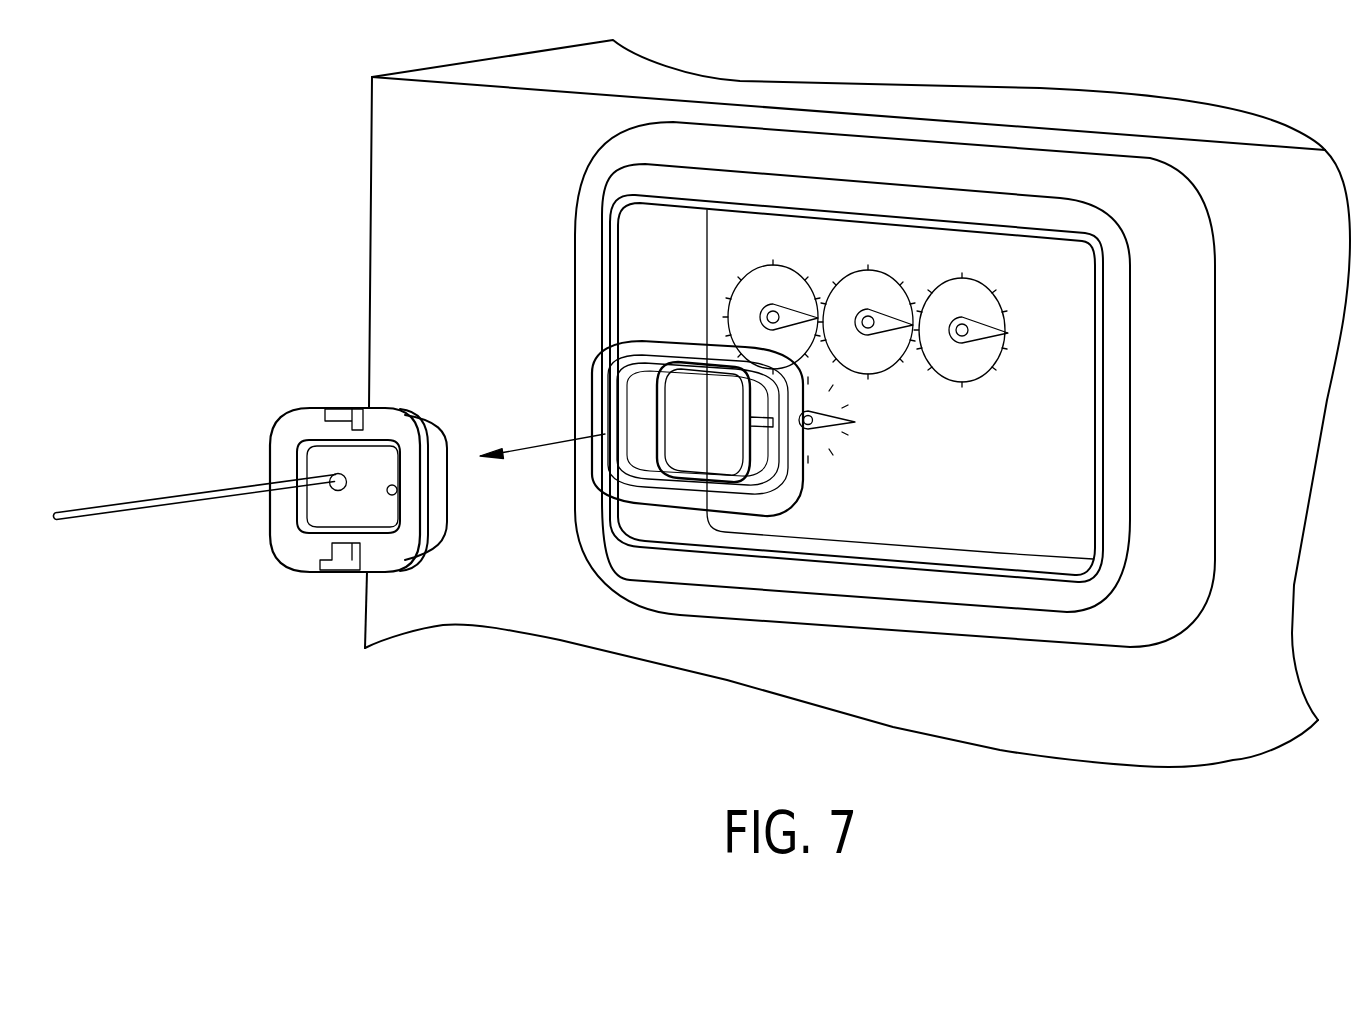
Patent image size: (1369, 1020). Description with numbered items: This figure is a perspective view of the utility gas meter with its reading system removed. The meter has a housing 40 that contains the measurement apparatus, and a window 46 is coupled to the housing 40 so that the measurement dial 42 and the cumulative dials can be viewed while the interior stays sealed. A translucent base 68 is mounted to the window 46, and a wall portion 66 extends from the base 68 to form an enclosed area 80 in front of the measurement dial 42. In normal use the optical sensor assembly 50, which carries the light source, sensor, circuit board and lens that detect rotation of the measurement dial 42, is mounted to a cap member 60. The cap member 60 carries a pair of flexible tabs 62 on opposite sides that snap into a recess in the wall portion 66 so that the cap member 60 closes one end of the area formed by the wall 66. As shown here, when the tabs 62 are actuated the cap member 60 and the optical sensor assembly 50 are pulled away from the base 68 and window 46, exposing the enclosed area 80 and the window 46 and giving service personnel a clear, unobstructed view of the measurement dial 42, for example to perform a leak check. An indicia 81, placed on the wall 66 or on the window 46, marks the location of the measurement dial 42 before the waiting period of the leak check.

The housing 40 is at (363, 213).
The measurement dial 42 is at (855, 414).
The window 46 is at (704, 466).
The optical sensor assembly 50 is at (452, 513).
The cap member 60 is at (275, 440).
The tabs 62 is at (345, 407).
The wall portion 66 is at (603, 405).
The translucent base 68 is at (1060, 325).
The enclosed area 80 is at (713, 380).
The indicia 81 is at (766, 420).